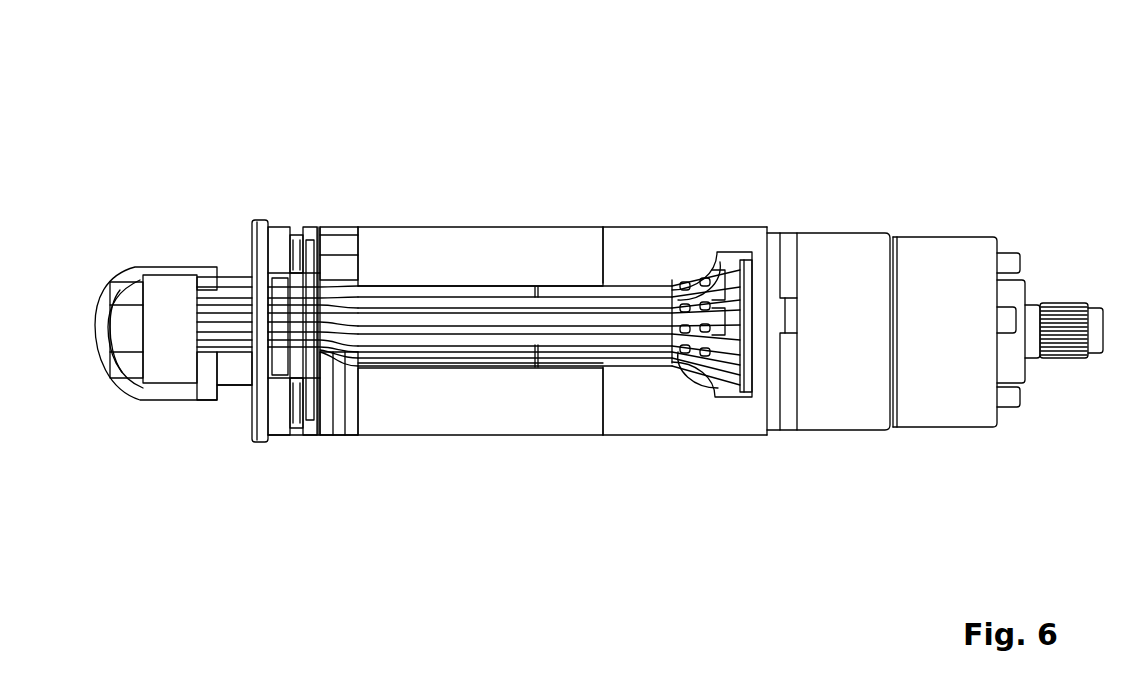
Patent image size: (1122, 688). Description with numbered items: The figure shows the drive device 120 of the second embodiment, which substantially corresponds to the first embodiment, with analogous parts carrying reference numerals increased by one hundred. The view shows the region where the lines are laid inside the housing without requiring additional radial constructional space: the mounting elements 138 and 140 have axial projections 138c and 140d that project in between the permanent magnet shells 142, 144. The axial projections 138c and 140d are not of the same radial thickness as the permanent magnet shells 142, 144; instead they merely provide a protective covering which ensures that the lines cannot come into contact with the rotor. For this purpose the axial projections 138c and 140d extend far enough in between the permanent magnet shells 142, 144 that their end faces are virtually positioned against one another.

The drive device 120 is at (599, 283).
The mounting element 138 is at (348, 247).
The axial projection 138c is at (466, 365).
The mounting element 140 is at (665, 245).
The axial projection 140d is at (570, 364).
The permanent magnet shell 142 is at (450, 240).
The permanent magnet shell 144 is at (398, 412).